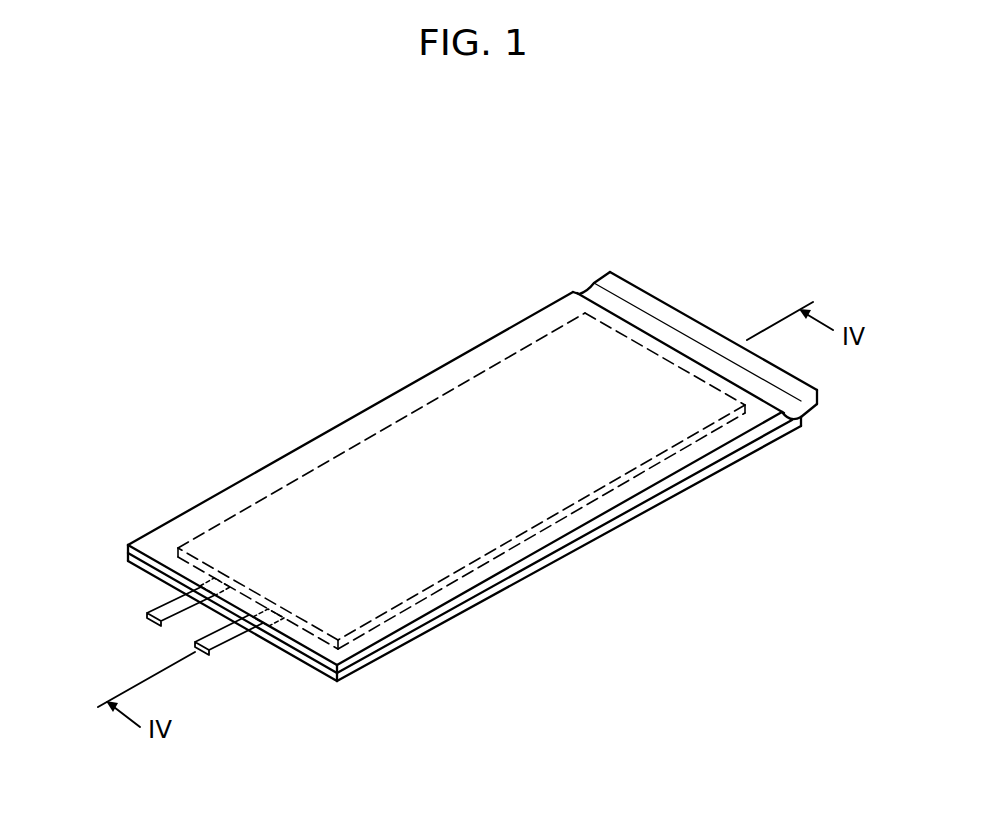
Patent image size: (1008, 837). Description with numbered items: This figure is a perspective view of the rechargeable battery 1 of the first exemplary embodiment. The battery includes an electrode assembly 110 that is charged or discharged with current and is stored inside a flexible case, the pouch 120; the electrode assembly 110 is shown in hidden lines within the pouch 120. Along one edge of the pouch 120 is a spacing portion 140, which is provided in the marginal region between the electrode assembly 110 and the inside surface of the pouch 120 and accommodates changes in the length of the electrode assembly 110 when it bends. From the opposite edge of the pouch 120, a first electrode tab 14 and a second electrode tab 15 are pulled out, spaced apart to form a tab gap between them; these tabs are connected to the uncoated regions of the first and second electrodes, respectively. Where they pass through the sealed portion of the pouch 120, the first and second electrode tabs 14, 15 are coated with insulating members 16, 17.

The rechargeable battery 1 is at (488, 212).
The electrode assembly 110 is at (272, 492).
The pouch 120 is at (395, 392).
The spacing portion 140 is at (670, 318).
The first electrode tab 14 is at (217, 643).
The second electrode tab 15 is at (158, 617).
The insulating member 16 is at (242, 623).
The insulating member 17 is at (180, 601).